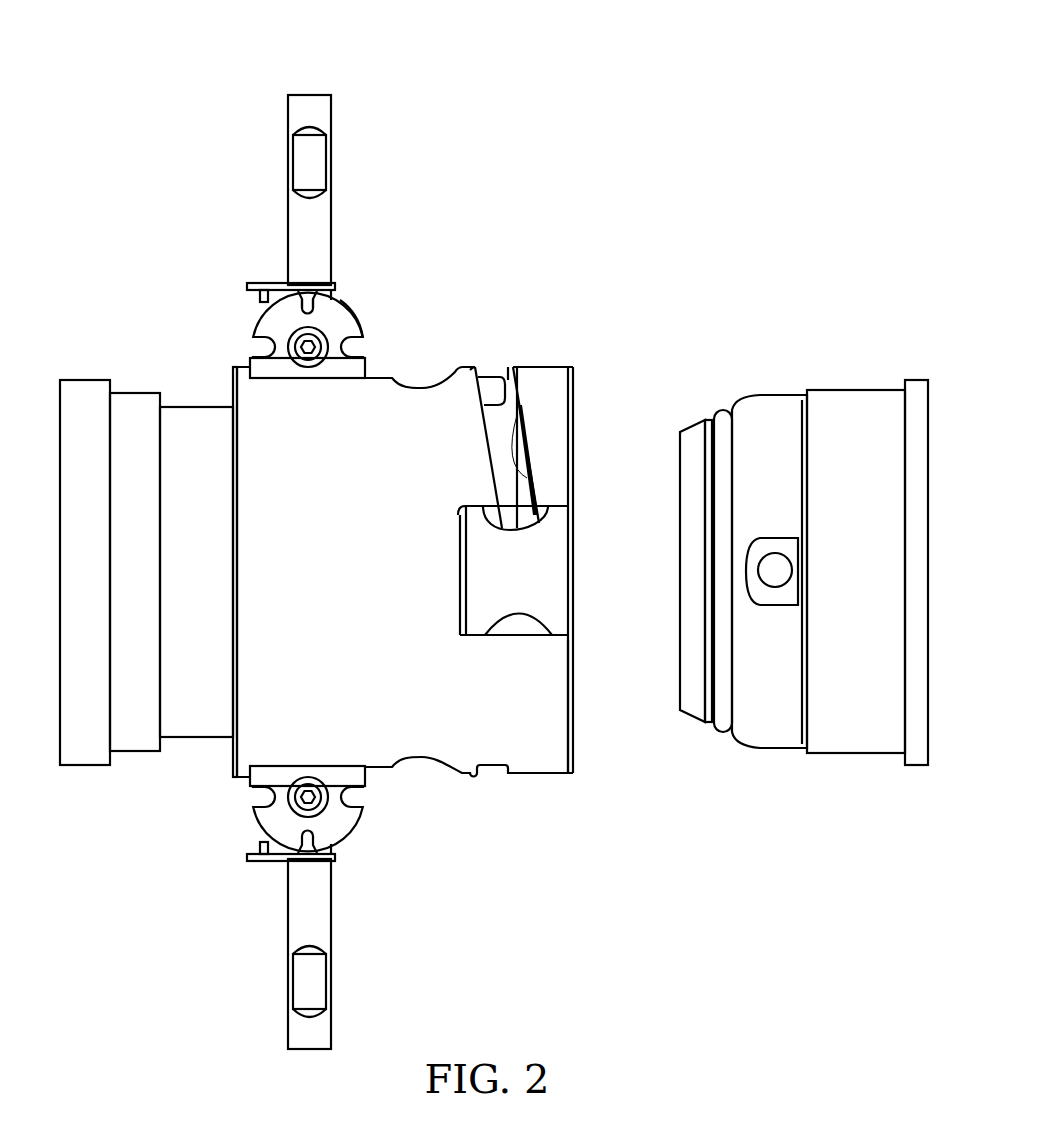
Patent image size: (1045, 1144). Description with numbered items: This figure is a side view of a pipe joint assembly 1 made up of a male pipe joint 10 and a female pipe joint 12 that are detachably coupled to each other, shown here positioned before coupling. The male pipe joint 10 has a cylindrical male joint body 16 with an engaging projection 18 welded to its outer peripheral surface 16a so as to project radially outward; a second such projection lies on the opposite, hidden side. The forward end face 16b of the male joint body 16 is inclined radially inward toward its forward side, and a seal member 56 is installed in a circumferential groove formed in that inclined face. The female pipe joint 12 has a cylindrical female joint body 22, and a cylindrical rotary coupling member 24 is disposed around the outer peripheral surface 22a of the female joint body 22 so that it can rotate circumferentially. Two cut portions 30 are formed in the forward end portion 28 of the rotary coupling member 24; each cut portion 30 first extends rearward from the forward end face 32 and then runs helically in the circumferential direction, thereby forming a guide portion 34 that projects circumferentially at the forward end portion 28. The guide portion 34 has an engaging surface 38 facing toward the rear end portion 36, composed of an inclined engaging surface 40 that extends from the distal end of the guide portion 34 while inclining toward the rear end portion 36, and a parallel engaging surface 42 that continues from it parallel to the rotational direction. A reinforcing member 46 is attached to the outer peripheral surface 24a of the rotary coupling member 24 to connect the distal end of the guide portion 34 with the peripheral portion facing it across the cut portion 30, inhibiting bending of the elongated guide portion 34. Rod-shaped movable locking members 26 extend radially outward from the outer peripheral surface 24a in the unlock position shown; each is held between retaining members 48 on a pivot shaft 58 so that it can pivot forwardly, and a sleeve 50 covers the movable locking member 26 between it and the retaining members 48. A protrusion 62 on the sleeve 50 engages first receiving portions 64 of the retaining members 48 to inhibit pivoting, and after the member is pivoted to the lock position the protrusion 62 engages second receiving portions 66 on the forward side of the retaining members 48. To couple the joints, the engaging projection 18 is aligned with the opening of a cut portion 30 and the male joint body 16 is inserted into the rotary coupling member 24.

The pipe joint assembly 1 is at (650, 168).
The male pipe joint 10 is at (872, 380).
The female pipe joint 12 is at (98, 368).
The male joint body 16 is at (848, 400).
The outer peripheral surface 16a is at (768, 395).
The forward end face 16b is at (693, 445).
The engaging projection 18 is at (775, 575).
The female joint body 22 is at (175, 455).
The outer peripheral surface 22a is at (200, 405).
The rotary coupling member 24 is at (445, 440).
The outer peripheral surface 24a is at (382, 378).
The movable locking member 26 is at (312, 108).
The forward end portion 28 is at (565, 405).
The cut portion 30 is at (482, 372).
The forward end face 32 is at (575, 660).
The guide portion 34 is at (545, 457).
The rear end portion 36 is at (252, 595).
The engaging surface 38 is at (573, 312).
The inclined engaging surface 40 is at (517, 415).
The parallel engaging surface 42 is at (490, 385).
The reinforcing member 46 is at (520, 570).
The retaining member 48 is at (288, 305).
The sleeve 50 is at (260, 301).
The seal member 56 is at (723, 420).
The pivot shaft 58 is at (262, 345).
The protrusion 62 is at (307, 305).
The first receiving portion 64 is at (313, 292).
The second receiving portion 66 is at (370, 333).